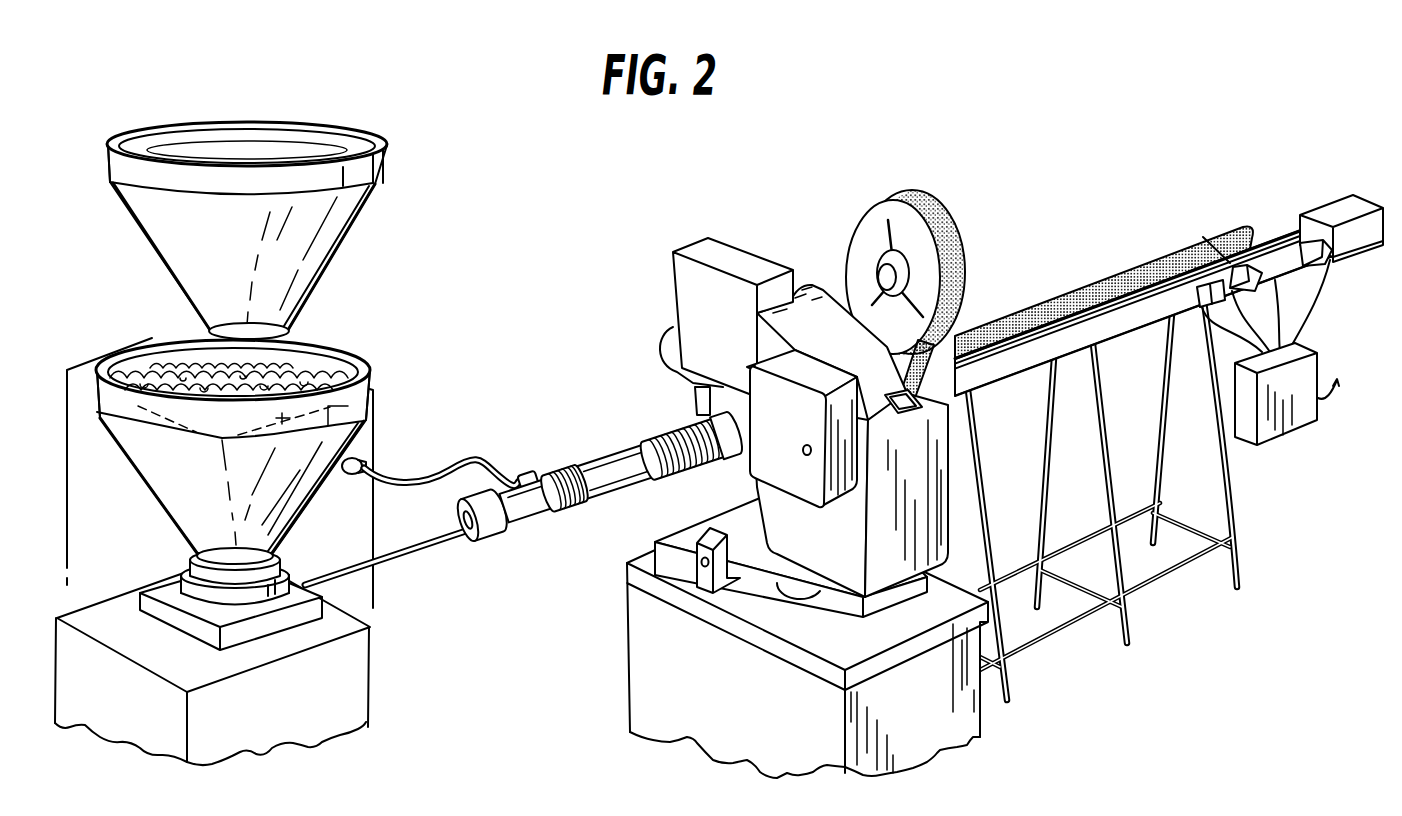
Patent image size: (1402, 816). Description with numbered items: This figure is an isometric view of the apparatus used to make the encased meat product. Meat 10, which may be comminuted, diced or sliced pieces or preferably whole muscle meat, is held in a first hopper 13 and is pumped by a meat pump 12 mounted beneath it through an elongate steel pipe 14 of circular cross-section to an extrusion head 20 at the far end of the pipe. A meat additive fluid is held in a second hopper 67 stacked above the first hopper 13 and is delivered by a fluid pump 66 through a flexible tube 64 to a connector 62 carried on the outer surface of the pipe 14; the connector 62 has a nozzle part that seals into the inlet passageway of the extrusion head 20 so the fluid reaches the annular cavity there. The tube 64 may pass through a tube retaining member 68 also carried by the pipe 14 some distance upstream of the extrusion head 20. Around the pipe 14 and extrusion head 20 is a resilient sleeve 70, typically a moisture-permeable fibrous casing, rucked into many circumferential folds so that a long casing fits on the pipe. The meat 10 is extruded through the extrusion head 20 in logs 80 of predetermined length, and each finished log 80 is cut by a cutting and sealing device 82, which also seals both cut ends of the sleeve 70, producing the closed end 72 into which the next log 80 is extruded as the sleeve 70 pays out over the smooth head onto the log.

The meat 10 is at (173, 365).
The meat pump 12 is at (347, 683).
The first hopper 13 is at (231, 419).
The elongate steel pipe 14 is at (600, 485).
The extrusion head 20 is at (627, 466).
The connector 62 is at (700, 410).
The flexible tube 64 is at (577, 484).
The fluid pump 66 is at (370, 445).
The second hopper 67 is at (300, 235).
The tube retaining member 68 is at (526, 475).
The resilient sleeve 70 is at (564, 489).
The closed end of the sleeve 72 is at (1258, 247).
The log 80 is at (1102, 290).
The cutting and sealing device 82 is at (783, 417).